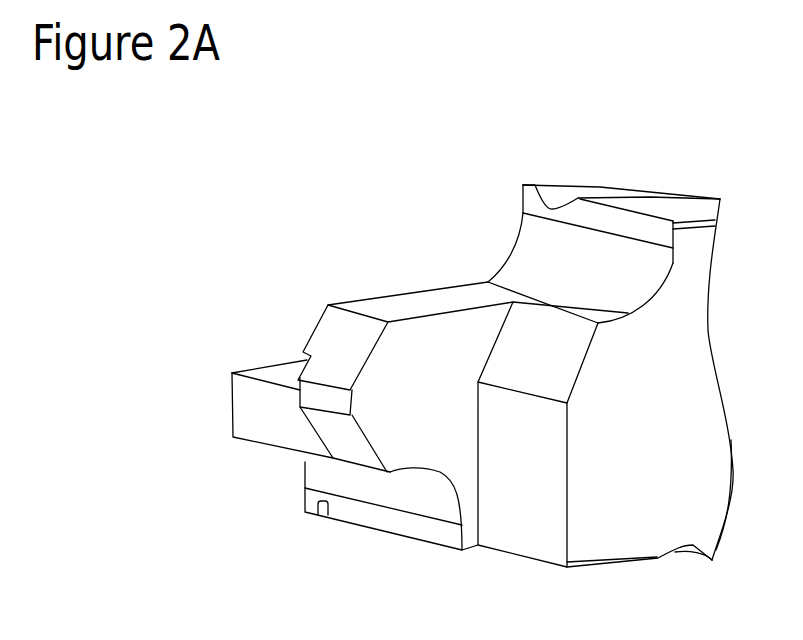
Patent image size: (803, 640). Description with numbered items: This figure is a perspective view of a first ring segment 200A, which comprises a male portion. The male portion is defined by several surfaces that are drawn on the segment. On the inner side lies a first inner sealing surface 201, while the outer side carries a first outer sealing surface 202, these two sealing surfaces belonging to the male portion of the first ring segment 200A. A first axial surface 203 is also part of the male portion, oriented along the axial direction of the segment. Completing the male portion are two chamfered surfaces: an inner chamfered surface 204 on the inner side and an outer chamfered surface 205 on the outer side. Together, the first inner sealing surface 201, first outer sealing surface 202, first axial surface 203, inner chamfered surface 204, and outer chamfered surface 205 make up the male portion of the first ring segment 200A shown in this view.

The first ring segment 200A is at (154, 166).
The first inner sealing surface 201 is at (402, 473).
The first outer sealing surface 202 is at (420, 300).
The first axial surface 203 is at (420, 447).
The inner chamfered surface 204 is at (313, 428).
The outer chamfered surface 205 is at (322, 348).